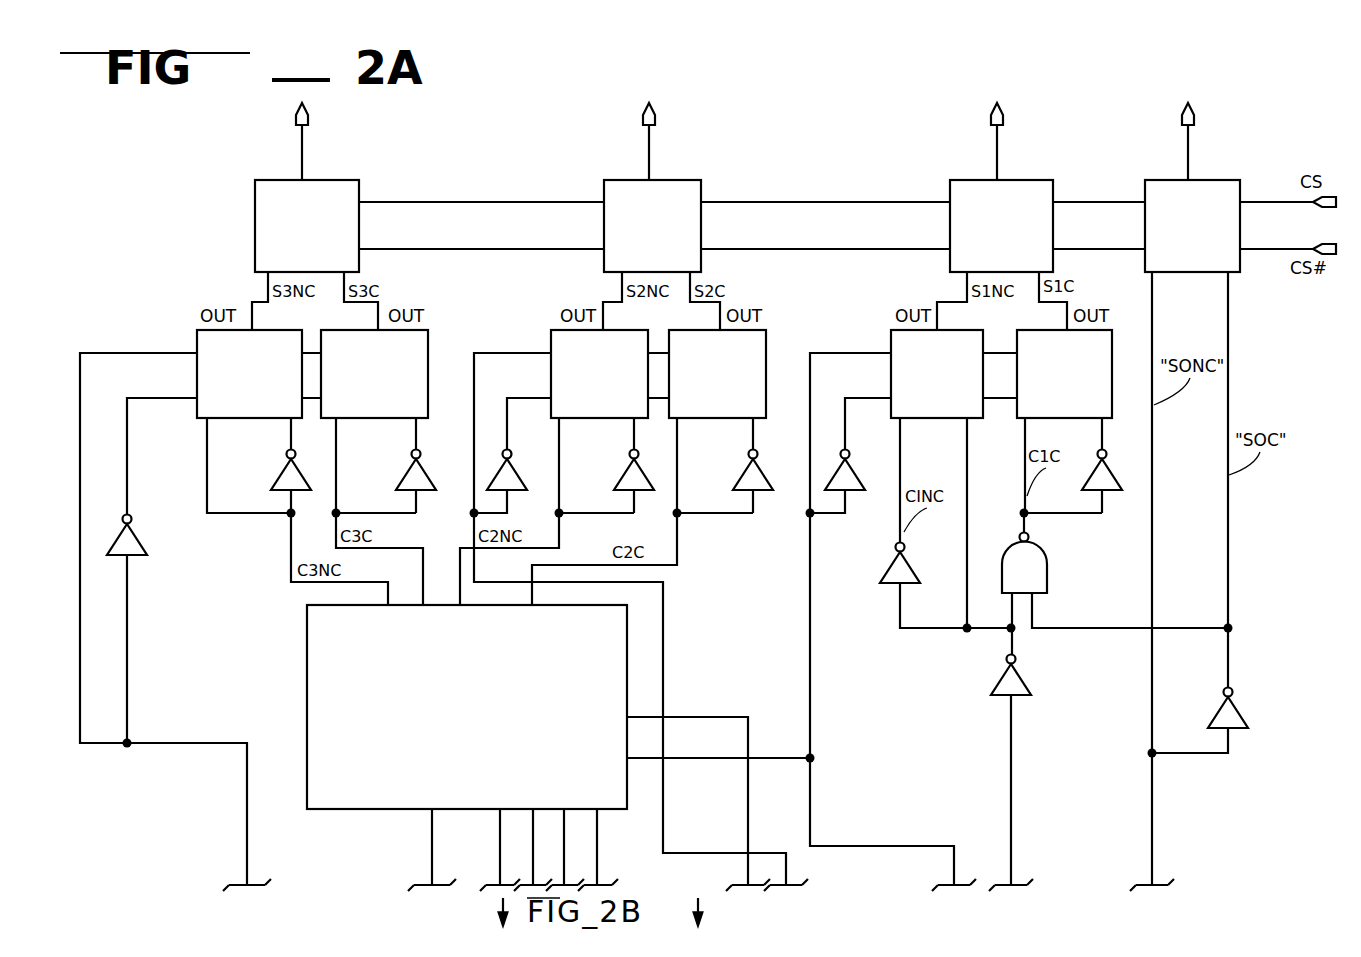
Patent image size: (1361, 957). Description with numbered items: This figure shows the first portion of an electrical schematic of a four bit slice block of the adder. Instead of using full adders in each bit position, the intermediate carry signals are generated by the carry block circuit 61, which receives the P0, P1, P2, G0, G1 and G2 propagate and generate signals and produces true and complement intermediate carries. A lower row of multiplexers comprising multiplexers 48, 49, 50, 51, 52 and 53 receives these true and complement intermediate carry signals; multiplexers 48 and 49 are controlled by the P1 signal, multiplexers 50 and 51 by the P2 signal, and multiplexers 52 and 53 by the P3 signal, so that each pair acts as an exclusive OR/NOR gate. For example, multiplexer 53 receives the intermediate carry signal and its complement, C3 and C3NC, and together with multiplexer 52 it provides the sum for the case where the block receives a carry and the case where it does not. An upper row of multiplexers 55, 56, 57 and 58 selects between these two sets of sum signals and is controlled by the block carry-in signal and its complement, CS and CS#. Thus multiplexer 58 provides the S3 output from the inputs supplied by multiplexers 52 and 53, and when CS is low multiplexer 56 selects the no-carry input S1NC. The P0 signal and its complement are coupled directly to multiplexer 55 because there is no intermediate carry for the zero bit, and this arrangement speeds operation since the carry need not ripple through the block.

The multiplexer 58 is at (322, 180).
The multiplexer 57 is at (672, 180).
The multiplexer 56 is at (1016, 180).
The multiplexer 55 is at (1209, 180).
The multiplexer 53 is at (238, 411).
The multiplexer 52 is at (362, 411).
The multiplexer 51 is at (588, 411).
The multiplexer 50 is at (706, 411).
The multiplexer 49 is at (925, 411).
The multiplexer 48 is at (1053, 411).
The carry block circuit 61 is at (338, 717).